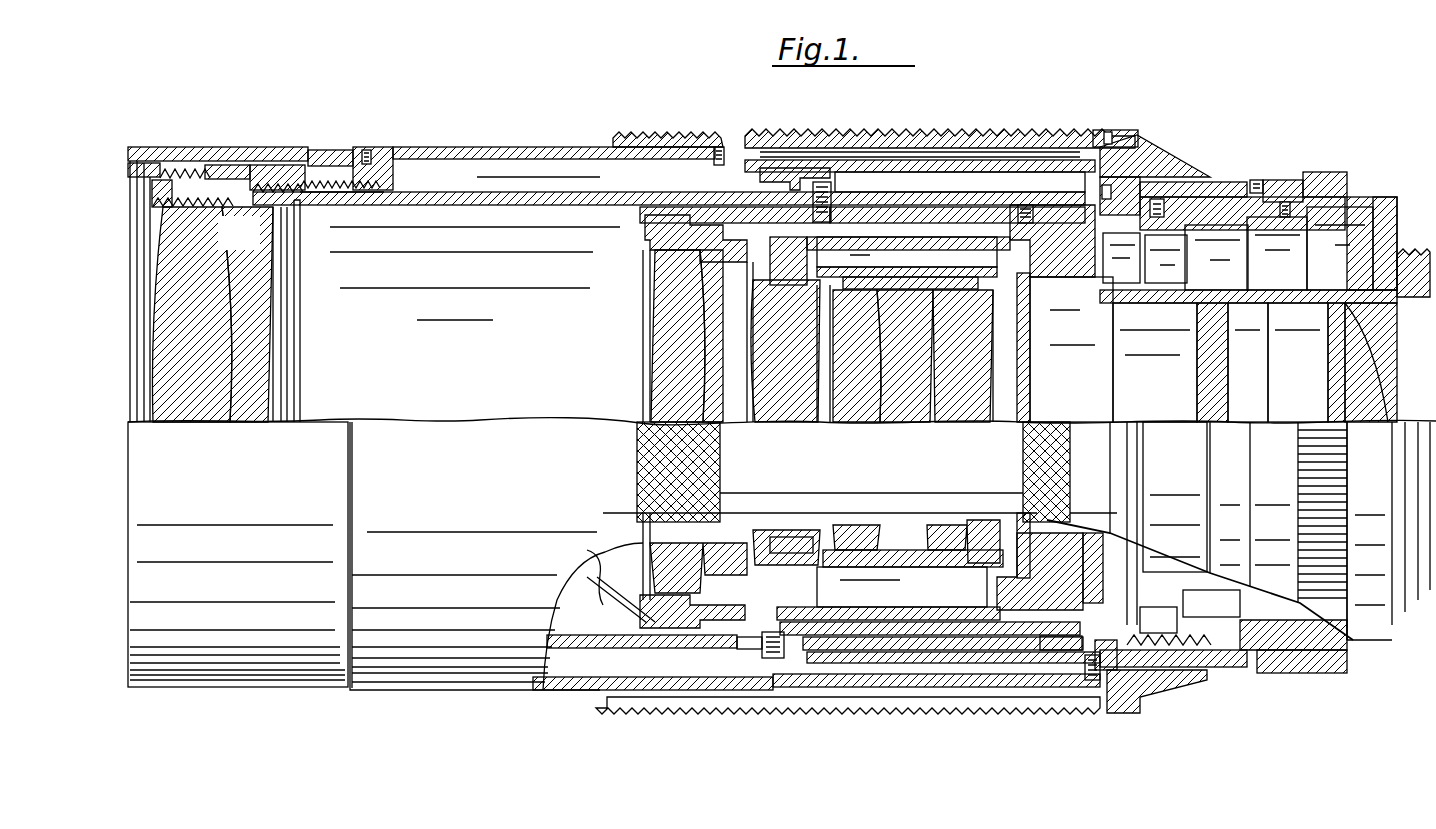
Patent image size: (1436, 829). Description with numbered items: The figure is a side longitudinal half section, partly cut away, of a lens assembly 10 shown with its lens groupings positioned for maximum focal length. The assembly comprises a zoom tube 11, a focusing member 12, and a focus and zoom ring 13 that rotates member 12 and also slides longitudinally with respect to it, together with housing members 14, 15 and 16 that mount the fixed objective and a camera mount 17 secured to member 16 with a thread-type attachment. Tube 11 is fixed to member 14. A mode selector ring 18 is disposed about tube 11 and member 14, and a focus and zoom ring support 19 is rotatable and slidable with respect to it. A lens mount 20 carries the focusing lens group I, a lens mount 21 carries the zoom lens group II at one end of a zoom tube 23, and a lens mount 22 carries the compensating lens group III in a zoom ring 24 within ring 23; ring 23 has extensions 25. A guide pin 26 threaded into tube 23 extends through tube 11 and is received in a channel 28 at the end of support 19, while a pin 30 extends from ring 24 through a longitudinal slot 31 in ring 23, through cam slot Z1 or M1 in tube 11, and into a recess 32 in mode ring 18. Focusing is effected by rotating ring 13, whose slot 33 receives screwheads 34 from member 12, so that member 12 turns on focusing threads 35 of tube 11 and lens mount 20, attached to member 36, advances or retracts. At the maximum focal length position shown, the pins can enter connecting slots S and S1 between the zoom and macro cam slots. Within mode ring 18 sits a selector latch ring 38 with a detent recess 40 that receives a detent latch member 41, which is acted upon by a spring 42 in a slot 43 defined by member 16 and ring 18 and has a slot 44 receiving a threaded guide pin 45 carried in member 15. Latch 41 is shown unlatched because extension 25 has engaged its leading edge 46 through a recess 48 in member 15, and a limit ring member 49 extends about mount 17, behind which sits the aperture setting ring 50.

The lens assembly 10 is at (722, 108).
The zoom tube 11 is at (568, 192).
The focusing member 12 is at (472, 150).
The focus and zoom ring 13 is at (982, 135).
The housing member 14 is at (905, 284).
The housing member 15 is at (1072, 268).
The housing member 16 is at (1253, 230).
The camera mount 17 is at (1385, 230).
The mode selector ring 18 is at (1226, 184).
The focus and zoom ring support 19 is at (898, 162).
The lens mount 20 is at (226, 311).
The lens mount 21 is at (640, 243).
The lens mount 22 is at (813, 395).
The zoom tube 23 is at (688, 213).
The zoom ring 24 is at (905, 237).
The extension 25 is at (1045, 620).
The guide pin 26 is at (776, 660).
The channel 28 is at (797, 180).
The pin 30 is at (842, 192).
The longitudinal slot 31 is at (928, 212).
The recess 32 is at (788, 172).
The slot 33 is at (661, 147).
The screwheads 34 is at (719, 147).
The focusing threads 35 is at (290, 195).
The member 36 is at (342, 166).
The selector latch ring 38 is at (1115, 182).
The detent recess 40 is at (1117, 652).
The detent latch member 41 is at (1137, 668).
The spring 42 is at (1196, 672).
The slot 43 is at (1182, 628).
The slot 44 is at (1110, 625).
The threaded guide pin 45 is at (1175, 497).
The leading edge 46 is at (1052, 640).
The recess 48 is at (972, 654).
The limit ring member 49 is at (1280, 180).
The aperture setting adjustment ring 50 is at (1320, 173).
The focusing lens group I is at (284, 304).
The zoom lens group II is at (652, 303).
The compensating lens group III is at (812, 428).
The cam slot Z1 is at (645, 370).
The cam slot M1 is at (595, 568).
The connecting slot S is at (722, 648).
The connecting slot S1 is at (870, 205).